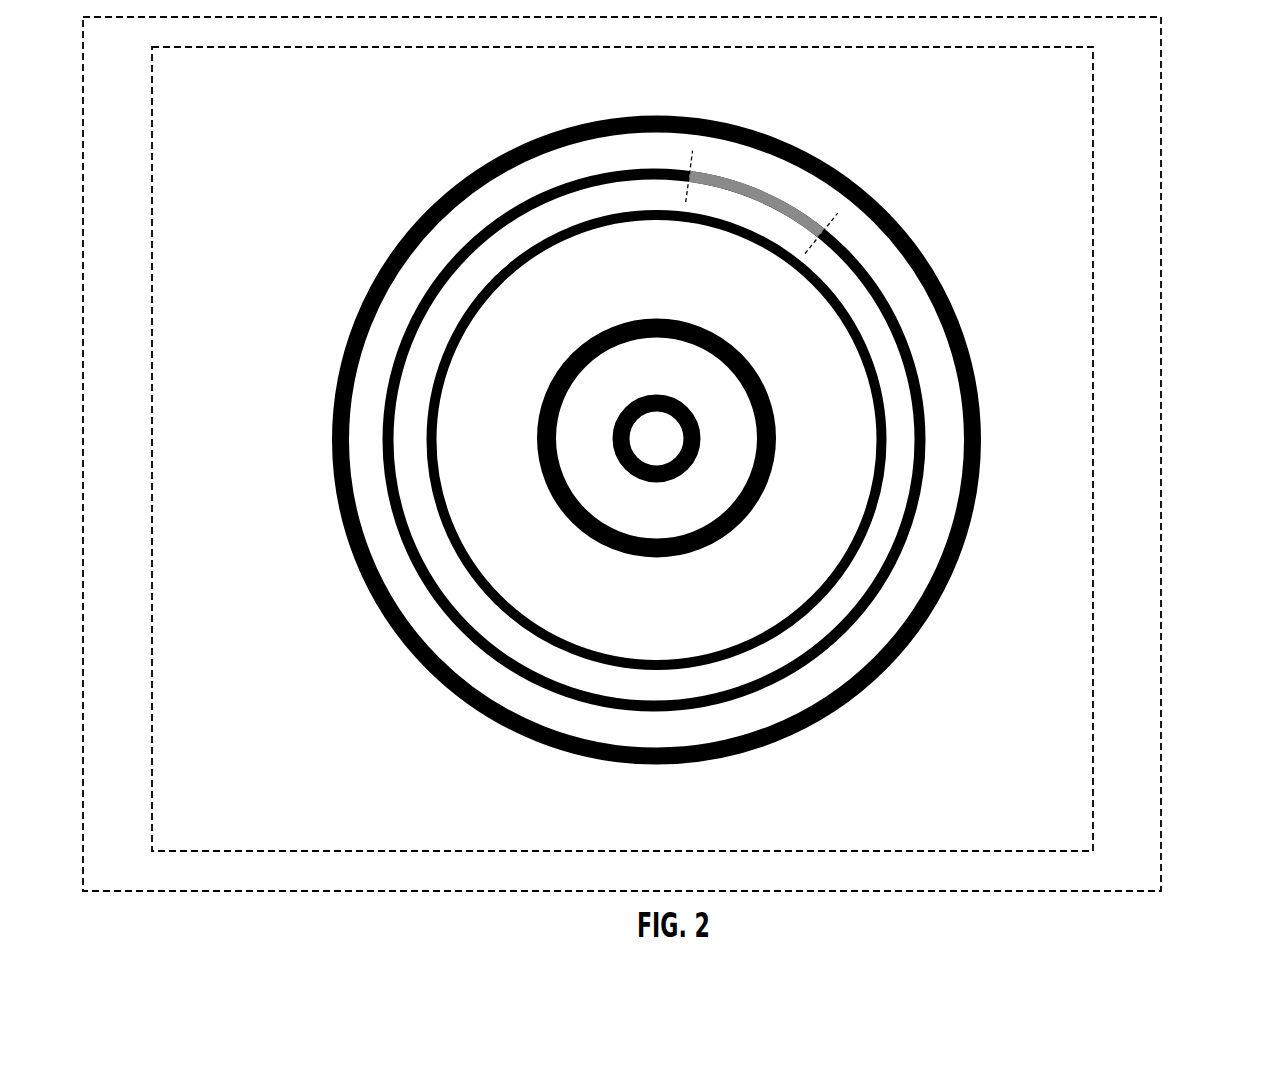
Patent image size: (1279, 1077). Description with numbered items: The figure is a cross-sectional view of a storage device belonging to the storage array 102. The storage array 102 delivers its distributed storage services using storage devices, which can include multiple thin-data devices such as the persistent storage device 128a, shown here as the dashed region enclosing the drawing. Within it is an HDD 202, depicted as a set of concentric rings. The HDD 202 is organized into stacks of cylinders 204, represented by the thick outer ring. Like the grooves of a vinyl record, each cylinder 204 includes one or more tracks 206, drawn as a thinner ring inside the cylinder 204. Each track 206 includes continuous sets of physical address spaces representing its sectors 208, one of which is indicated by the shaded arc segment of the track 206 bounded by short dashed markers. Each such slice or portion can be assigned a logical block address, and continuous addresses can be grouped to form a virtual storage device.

The storage array 102 is at (1161, 710).
The persistent storage device 128a is at (642, 814).
The HDD 202 is at (503, 113).
The cylinder 204 is at (435, 689).
The track 206 is at (432, 260).
The sector 208 is at (790, 190).